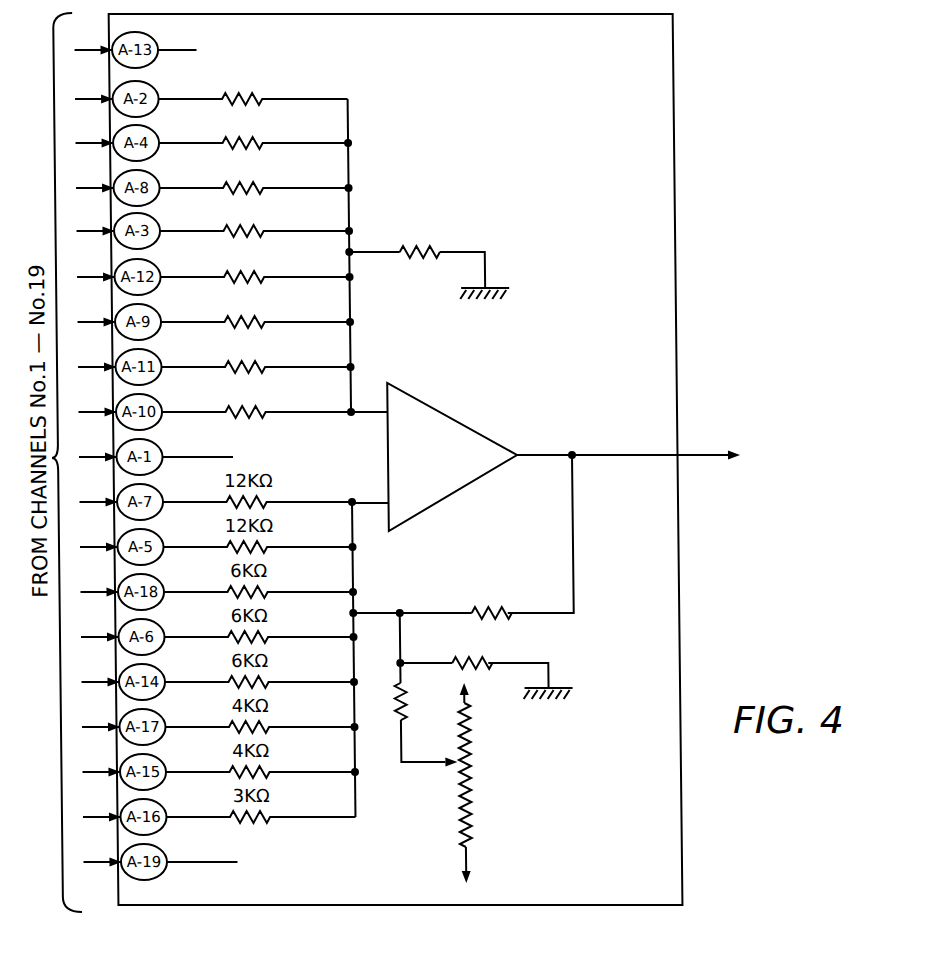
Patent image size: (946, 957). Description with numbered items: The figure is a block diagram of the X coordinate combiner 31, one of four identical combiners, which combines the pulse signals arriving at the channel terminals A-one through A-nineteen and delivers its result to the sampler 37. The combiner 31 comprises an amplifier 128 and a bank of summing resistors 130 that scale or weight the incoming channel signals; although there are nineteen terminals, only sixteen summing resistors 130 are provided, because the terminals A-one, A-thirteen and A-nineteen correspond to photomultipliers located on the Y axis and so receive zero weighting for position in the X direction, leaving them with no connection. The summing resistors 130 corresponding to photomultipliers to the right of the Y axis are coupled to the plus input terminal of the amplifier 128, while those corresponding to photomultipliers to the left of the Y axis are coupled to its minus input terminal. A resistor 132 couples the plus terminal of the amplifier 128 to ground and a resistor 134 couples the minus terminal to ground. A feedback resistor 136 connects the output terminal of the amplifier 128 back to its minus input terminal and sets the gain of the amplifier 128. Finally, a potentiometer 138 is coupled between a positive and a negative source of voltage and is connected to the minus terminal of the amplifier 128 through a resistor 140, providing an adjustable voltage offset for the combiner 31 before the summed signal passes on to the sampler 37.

The X coordinate combiner 31 is at (672, 30).
The summing resistors 130 is at (363, 212).
The resistor 132 is at (426, 249).
The amplifier 128 is at (446, 418).
The feedback resistor 136 is at (477, 605).
The resistor 134 is at (472, 658).
The resistor 140 is at (400, 707).
The potentiometer 138 is at (463, 762).
The sampler 37 is at (712, 454).